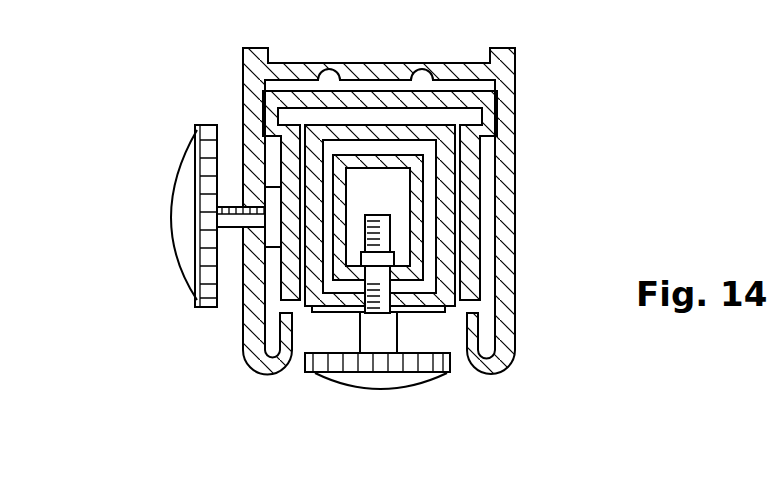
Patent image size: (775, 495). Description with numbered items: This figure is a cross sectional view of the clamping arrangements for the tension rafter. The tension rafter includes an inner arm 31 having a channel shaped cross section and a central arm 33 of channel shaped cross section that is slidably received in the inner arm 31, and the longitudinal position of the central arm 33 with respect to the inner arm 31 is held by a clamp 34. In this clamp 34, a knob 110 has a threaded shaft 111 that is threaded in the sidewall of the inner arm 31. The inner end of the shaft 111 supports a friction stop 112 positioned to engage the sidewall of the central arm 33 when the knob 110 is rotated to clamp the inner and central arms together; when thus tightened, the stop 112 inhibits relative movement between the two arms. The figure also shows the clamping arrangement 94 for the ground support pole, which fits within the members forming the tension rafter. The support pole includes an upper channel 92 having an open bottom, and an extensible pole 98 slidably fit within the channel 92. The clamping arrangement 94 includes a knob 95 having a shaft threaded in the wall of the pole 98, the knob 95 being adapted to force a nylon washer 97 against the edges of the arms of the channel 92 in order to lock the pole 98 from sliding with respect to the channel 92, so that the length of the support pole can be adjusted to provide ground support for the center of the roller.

The inner arm 31 is at (507, 93).
The central arm 33 is at (468, 170).
The upper channel 92 is at (443, 218).
The extensible pole 98 is at (400, 155).
The nylon washer 97 is at (420, 313).
The knob 95 is at (397, 398).
The knob 110 is at (192, 170).
The threaded shaft 111 is at (238, 207).
The friction stop 112 is at (278, 238).
The clamp 34 is at (187, 237).
The clamping arrangement 94 is at (504, 460).